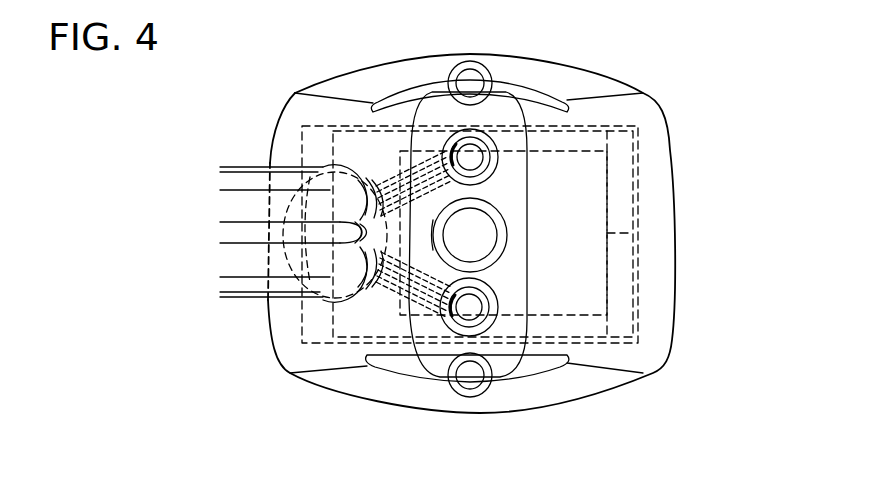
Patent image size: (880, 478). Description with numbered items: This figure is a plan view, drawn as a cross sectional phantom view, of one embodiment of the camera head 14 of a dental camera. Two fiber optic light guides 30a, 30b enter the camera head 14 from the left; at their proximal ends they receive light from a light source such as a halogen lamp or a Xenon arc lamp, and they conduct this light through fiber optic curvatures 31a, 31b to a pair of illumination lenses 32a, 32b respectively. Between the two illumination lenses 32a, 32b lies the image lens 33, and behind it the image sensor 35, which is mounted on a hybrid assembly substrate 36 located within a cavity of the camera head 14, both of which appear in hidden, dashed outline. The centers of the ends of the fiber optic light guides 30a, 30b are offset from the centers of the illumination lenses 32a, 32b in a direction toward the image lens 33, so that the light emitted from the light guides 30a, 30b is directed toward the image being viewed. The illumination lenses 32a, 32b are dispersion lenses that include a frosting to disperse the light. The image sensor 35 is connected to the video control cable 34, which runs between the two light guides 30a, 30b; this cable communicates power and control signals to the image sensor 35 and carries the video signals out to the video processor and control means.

The camera head 14 is at (603, 66).
The fiber optic light guide 30a is at (233, 178).
The fiber optic light guide 30b is at (237, 268).
The fiber optic curvature 31a is at (354, 162).
The fiber optic curvature 31b is at (336, 292).
The illumination lens 32a is at (476, 142).
The illumination lens 32b is at (480, 324).
The image lens 33 is at (487, 236).
The video control cable 34 is at (226, 233).
The image sensor 35 is at (607, 233).
The hybrid assembly substrate 36 is at (640, 150).